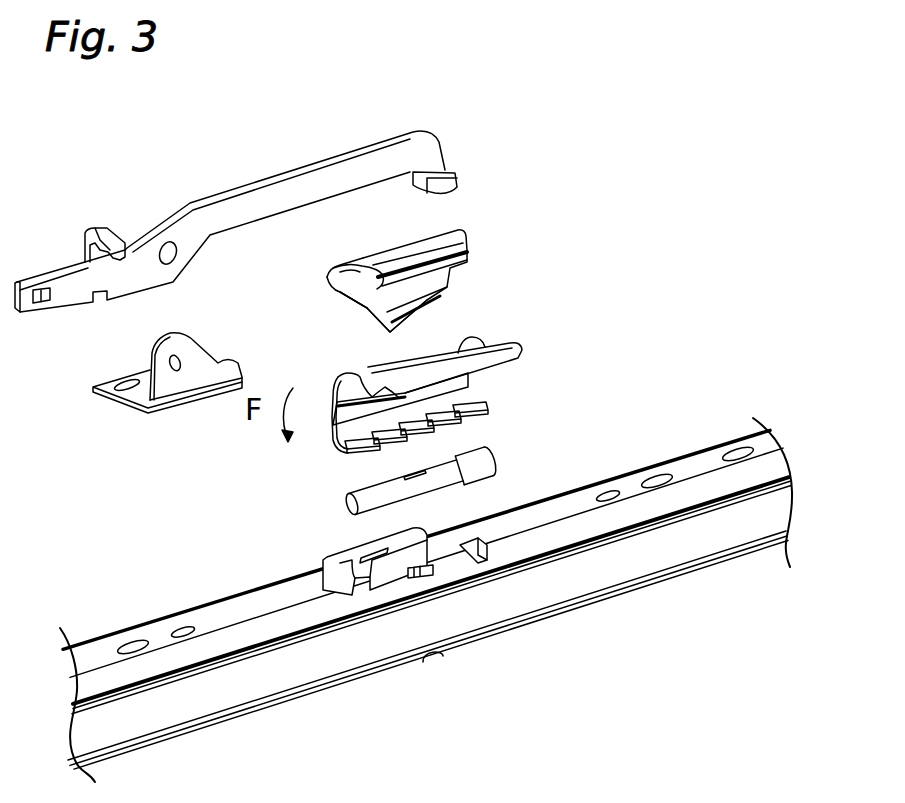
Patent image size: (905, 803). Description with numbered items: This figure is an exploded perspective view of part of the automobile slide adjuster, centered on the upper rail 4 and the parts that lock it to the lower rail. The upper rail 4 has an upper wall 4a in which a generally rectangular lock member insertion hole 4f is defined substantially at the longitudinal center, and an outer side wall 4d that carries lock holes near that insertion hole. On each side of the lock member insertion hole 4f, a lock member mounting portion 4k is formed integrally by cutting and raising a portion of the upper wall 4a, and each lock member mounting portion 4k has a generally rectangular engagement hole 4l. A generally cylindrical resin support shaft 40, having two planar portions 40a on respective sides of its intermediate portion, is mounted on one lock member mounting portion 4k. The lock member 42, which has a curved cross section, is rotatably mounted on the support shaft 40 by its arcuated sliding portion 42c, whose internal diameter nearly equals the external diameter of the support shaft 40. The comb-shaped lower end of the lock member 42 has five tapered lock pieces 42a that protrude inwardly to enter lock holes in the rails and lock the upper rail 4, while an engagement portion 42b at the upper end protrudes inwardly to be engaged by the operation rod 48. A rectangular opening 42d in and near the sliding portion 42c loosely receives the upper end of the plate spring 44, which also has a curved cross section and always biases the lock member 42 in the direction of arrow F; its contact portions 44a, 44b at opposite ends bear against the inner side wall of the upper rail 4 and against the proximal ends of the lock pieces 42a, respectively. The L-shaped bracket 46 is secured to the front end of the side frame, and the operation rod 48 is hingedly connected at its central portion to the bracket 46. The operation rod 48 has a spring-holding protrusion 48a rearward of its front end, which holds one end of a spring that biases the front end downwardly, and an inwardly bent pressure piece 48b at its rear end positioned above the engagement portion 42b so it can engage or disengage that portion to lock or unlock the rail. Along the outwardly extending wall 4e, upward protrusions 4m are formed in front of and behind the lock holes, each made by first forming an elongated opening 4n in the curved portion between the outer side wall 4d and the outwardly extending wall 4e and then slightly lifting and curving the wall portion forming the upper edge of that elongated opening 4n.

The upper rail 4 is at (426, 604).
The upper wall 4a is at (215, 620).
The outer side wall 4d is at (232, 685).
The outwardly extending wall 4e is at (167, 680).
The lock member insertion hole 4f is at (323, 556).
The lock member mounting portion 4k is at (398, 545).
The engagement hole 4l is at (428, 576).
The upward protrusion 4m is at (332, 628).
The elongated opening 4n is at (343, 628).
The support shaft 40 is at (499, 471).
The planar portion 40a is at (440, 488).
The lock member 42 is at (475, 368).
The lock pieces 42a is at (463, 425).
The engagement portion 42b is at (483, 388).
The sliding portion 42c is at (368, 381).
The rectangular opening 42d is at (430, 362).
The plate spring 44 is at (410, 277).
The contact portion 44a is at (330, 296).
The contact portion 44b is at (383, 331).
The L-shaped bracket 46 is at (170, 407).
The operation rod 48 is at (298, 215).
The spring-holding protrusion 48a is at (103, 228).
The pressure piece 48b is at (460, 180).